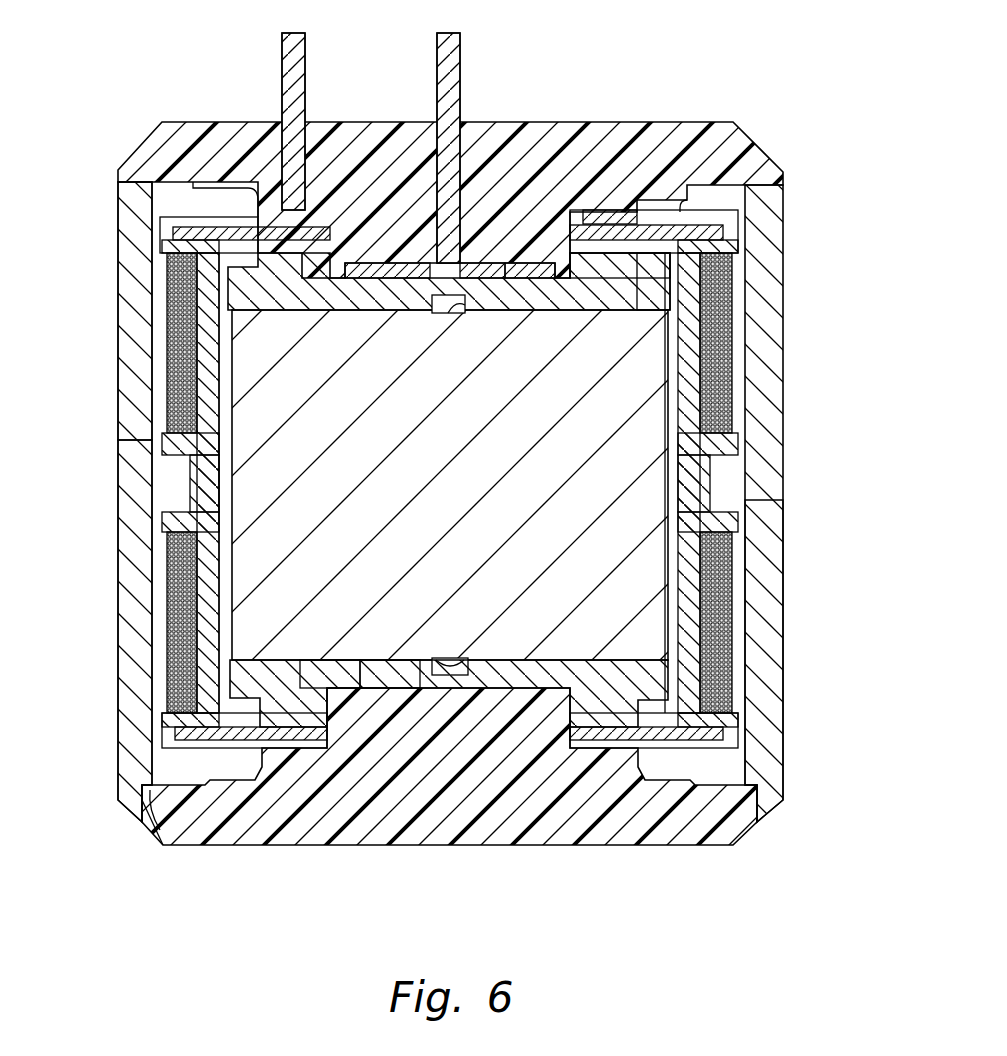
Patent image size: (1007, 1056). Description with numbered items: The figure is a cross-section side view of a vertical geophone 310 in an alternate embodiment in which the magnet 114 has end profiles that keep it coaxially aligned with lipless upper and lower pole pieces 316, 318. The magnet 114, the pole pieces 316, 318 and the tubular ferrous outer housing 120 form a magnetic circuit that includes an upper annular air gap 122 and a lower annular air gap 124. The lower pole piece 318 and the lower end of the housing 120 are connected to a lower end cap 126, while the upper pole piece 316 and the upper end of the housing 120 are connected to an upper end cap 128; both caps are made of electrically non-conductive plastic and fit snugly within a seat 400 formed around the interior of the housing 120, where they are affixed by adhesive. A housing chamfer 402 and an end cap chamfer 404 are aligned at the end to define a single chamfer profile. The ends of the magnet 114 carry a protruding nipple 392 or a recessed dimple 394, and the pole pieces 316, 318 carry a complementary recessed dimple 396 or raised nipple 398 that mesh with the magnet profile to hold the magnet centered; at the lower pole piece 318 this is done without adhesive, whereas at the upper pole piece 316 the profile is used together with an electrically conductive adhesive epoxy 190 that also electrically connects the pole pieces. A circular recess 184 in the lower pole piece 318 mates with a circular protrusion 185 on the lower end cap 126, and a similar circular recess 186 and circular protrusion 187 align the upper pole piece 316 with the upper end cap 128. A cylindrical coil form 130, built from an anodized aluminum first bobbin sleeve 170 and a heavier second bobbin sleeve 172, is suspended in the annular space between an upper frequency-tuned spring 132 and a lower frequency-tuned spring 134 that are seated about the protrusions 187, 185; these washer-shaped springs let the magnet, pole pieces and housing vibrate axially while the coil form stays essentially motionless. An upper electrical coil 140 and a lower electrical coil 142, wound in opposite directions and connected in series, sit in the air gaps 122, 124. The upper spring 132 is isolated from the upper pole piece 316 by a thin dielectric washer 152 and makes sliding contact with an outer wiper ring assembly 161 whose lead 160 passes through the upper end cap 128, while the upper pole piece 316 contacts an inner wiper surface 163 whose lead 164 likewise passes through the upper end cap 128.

The geophone 310 is at (126, 45).
The magnet 114 is at (232, 401).
The outer housing 120 is at (135, 568).
The upper annular air gap 122 is at (153, 331).
The lower annular air gap 124 is at (158, 622).
The lower end cap 126 is at (443, 846).
The upper end cap 128 is at (628, 140).
The coil form 130 is at (712, 487).
The upper frequency-tuned spring 132 is at (590, 215).
The lower frequency-tuned spring 134 is at (300, 737).
The upper electrical coil 140 is at (742, 377).
The lower electrical coil 142 is at (738, 587).
The dielectric washer 152 is at (290, 255).
The lead 160 is at (305, 62).
The outer wiper ring assembly 161 is at (604, 212).
The inner wiper surface 163 is at (400, 268).
The lead 164 is at (460, 62).
The first bobbin sleeve 170 is at (165, 443).
The second bobbin sleeve 172 is at (165, 523).
The circular recess 184 is at (370, 688).
The circular protrusion 185 is at (340, 688).
The circular recess 186 is at (578, 264).
The circular protrusion 187 is at (600, 266).
The adhesive epoxy 190 is at (670, 313).
The upper pole piece 316 is at (232, 305).
The lower pole piece 318 is at (232, 681).
The protruding nipple 392 is at (476, 305).
The recessed dimple 394 is at (446, 656).
The recessed dimple 396 is at (452, 305).
The raised nipple 398 is at (468, 656).
The seat 400 is at (150, 814).
The housing chamfer 402 is at (140, 806).
The end cap chamfer 404 is at (158, 826).